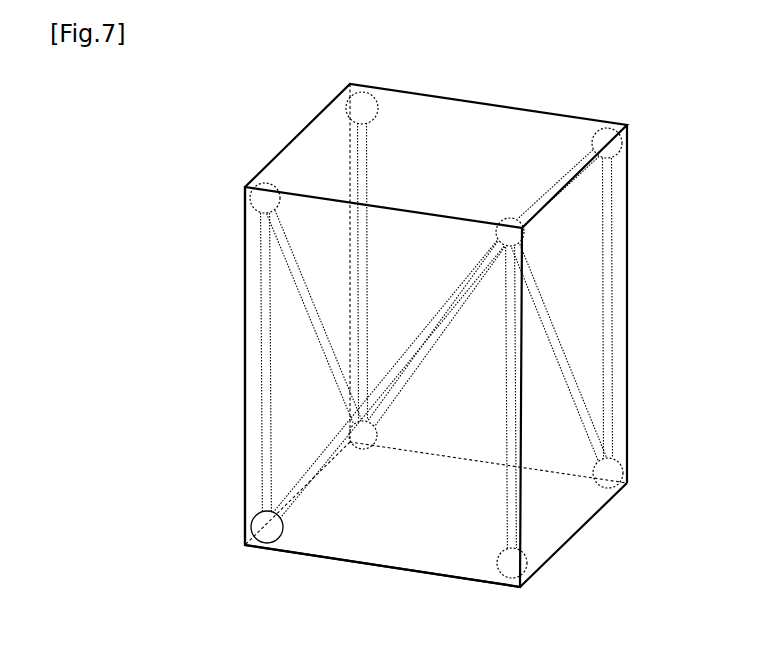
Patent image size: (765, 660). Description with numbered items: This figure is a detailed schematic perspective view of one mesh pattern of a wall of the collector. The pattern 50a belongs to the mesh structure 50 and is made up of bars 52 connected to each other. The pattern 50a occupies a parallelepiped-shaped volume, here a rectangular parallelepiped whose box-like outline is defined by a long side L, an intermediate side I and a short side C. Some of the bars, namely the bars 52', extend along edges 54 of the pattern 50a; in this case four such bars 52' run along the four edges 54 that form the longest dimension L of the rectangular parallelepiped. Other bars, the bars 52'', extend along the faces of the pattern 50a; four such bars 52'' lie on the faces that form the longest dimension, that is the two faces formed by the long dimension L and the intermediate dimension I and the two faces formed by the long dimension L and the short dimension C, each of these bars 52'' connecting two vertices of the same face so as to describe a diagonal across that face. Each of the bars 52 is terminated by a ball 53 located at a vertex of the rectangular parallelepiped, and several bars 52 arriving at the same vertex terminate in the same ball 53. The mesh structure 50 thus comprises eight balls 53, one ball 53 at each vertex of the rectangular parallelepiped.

The mesh structure 50 is at (170, 98).
The pattern 50a is at (138, 207).
The bars 52 is at (427, 335).
The bars extending along edges 52' is at (213, 362).
The bars extending along faces 52'' is at (606, 352).
The ball 53 is at (620, 144).
The edges 54 is at (245, 448).
The long side L is at (628, 270).
The short side C is at (582, 528).
The intermediate side I is at (445, 575).